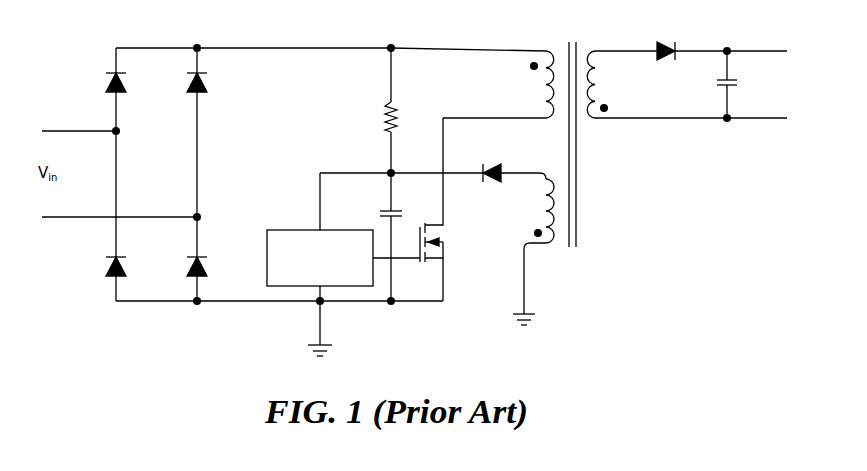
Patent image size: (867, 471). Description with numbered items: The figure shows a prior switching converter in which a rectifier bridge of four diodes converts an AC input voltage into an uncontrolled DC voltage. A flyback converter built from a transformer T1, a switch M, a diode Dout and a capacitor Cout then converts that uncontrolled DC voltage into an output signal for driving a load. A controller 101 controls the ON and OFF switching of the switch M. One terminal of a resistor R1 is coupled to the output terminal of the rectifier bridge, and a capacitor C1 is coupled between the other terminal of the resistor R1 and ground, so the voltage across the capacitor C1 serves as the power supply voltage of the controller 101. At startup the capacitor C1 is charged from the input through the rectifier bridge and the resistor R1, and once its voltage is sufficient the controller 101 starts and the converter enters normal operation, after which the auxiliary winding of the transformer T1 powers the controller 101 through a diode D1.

The controller 101 is at (266, 259).
The resistor R1 is at (404, 110).
The capacitor C1 is at (402, 237).
The diode D1 is at (492, 186).
The switch M is at (420, 209).
The transformer T1 is at (519, 170).
The diode Dout is at (664, 40).
The capacitor Cout is at (744, 84).